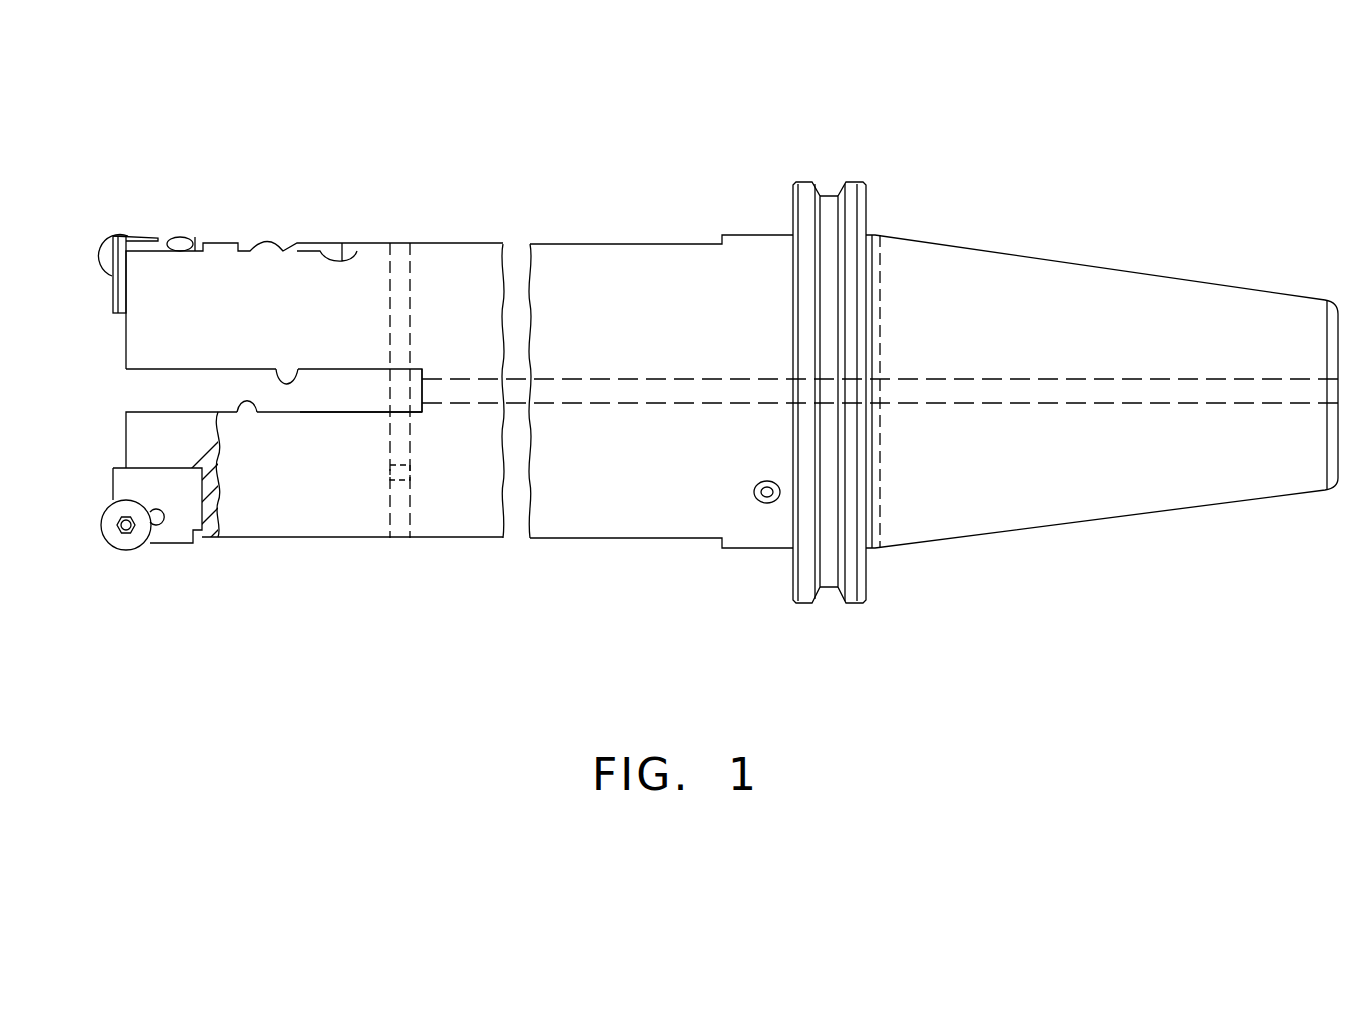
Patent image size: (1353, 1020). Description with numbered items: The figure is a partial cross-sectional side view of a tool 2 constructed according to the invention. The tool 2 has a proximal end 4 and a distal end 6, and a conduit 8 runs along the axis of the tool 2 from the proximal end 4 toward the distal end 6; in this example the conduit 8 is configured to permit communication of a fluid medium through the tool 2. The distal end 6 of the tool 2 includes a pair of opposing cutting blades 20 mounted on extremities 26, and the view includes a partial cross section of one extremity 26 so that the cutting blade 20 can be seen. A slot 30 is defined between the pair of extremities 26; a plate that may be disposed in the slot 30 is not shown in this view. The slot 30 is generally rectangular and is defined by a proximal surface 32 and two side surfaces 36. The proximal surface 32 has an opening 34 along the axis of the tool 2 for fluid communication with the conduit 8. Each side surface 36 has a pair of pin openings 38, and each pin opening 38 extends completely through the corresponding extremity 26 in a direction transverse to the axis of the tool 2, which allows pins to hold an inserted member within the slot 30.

The tool 2 is at (1002, 130).
The proximal end 4 is at (1311, 290).
The distal end 6 is at (96, 226).
The conduit 8 is at (582, 400).
The cutting blade 20 is at (128, 542).
The extremity 26 is at (243, 508).
The slot 30 is at (266, 449).
The proximal surface 32 is at (420, 371).
The opening 34 is at (420, 407).
The side surface 36 is at (294, 372).
The pin opening 38 is at (401, 262).